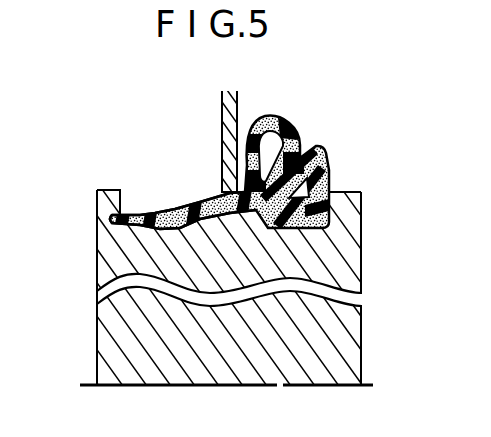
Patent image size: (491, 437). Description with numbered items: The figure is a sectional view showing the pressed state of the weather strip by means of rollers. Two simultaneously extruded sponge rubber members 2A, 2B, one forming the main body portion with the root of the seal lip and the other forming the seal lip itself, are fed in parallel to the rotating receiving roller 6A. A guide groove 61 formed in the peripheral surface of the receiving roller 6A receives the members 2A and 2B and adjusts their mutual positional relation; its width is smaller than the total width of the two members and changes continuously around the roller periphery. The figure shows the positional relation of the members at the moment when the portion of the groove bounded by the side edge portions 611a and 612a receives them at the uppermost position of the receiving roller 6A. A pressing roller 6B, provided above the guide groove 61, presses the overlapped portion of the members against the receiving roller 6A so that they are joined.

The pressing roller 6B is at (238, 112).
The sponge rubber member 2A is at (298, 138).
The sponge rubber member 2B is at (170, 207).
The side edge portion of guide groove 612a is at (119, 191).
The side edge portion of guide groove 611a is at (332, 196).
The guide groove 61 is at (223, 227).
The receiving roller 6A is at (112, 340).